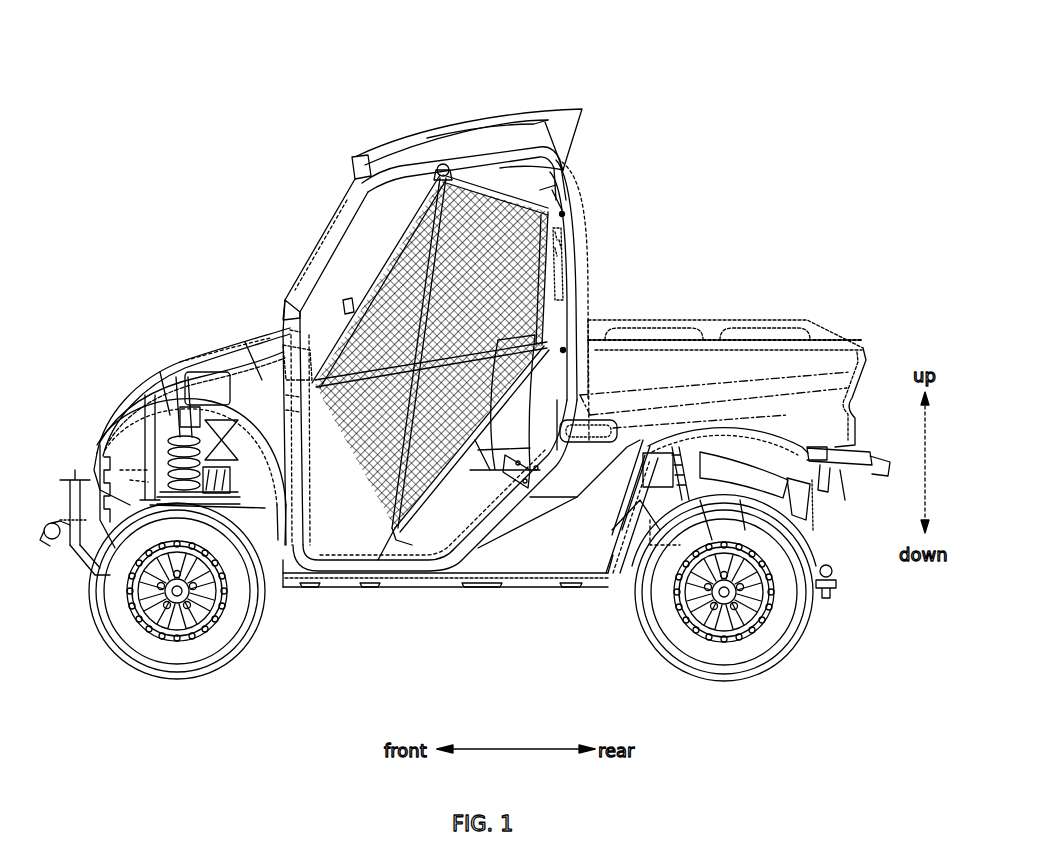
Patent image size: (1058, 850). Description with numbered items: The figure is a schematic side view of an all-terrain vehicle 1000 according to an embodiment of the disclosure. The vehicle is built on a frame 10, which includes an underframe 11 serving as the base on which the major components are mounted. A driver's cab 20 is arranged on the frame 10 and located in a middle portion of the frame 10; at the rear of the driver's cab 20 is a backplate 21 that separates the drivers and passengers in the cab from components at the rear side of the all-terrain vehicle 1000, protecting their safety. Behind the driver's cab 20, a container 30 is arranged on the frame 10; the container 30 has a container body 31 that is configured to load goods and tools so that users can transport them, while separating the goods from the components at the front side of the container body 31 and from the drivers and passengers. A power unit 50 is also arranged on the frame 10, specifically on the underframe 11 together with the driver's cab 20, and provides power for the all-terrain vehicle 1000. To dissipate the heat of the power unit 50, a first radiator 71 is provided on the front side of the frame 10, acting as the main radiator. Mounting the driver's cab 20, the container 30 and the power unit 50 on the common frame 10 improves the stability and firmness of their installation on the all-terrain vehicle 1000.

The all-terrain vehicle 1000 is at (547, 100).
The frame 10 is at (368, 573).
The underframe 11 is at (600, 567).
The driver's cab 20 is at (297, 307).
The backplate 21 is at (582, 305).
The container 30 is at (678, 353).
The container body 31 is at (597, 345).
The power unit 50 is at (667, 653).
The first radiator 71 is at (160, 398).